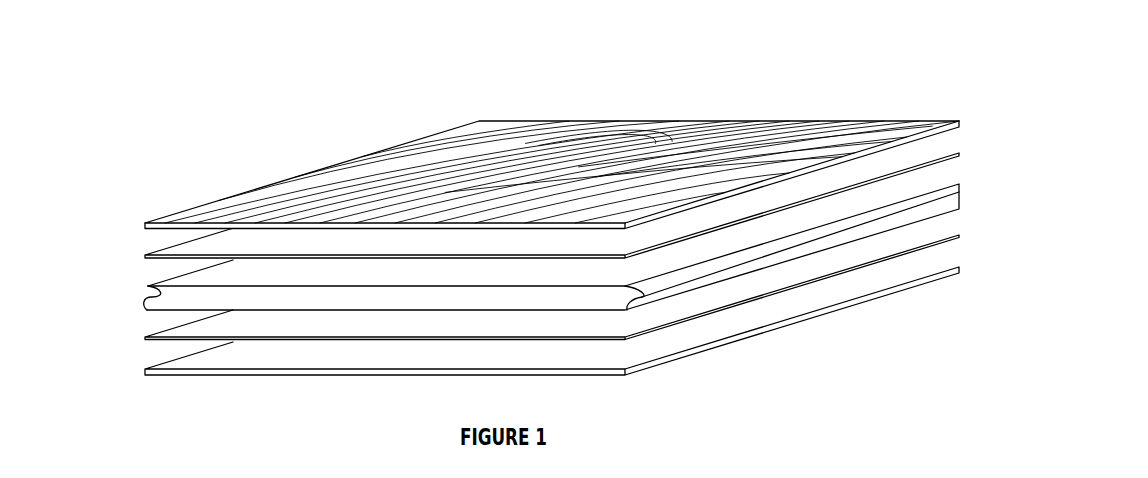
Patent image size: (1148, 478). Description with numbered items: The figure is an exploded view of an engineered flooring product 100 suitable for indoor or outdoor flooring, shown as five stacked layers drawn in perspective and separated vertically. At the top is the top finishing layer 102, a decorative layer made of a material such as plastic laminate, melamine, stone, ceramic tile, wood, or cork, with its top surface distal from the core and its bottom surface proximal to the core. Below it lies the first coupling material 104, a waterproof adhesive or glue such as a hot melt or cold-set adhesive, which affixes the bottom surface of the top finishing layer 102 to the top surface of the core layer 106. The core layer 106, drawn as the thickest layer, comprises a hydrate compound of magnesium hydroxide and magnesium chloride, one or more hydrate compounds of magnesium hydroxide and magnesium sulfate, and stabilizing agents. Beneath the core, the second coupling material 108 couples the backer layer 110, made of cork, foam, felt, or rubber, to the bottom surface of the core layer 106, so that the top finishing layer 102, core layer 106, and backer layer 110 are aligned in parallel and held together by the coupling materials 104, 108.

The engineered flooring product 100 is at (145, 52).
The top finishing layer 102 is at (143, 225).
The first coupling material 104 is at (140, 258).
The core layer 106 is at (140, 308).
The second coupling material 108 is at (140, 339).
The backer layer 110 is at (140, 375).